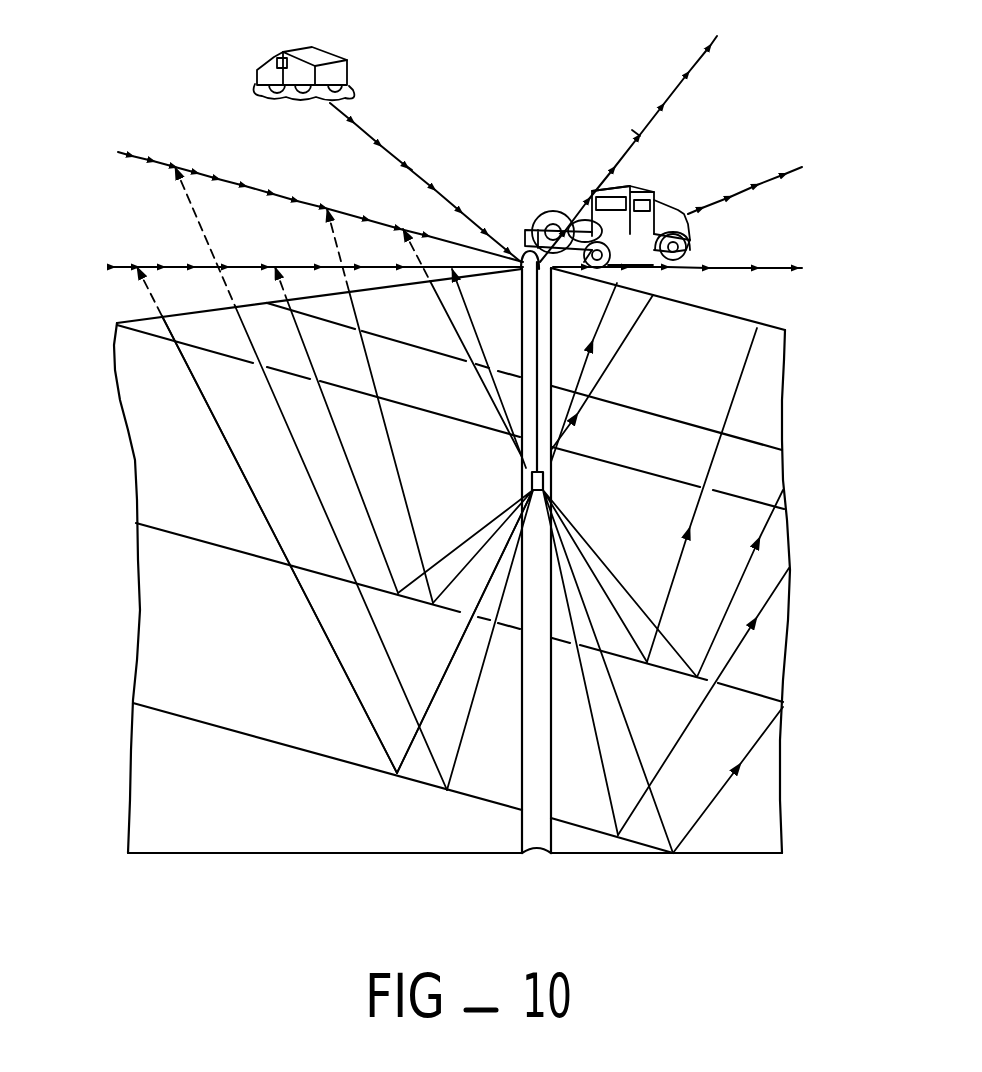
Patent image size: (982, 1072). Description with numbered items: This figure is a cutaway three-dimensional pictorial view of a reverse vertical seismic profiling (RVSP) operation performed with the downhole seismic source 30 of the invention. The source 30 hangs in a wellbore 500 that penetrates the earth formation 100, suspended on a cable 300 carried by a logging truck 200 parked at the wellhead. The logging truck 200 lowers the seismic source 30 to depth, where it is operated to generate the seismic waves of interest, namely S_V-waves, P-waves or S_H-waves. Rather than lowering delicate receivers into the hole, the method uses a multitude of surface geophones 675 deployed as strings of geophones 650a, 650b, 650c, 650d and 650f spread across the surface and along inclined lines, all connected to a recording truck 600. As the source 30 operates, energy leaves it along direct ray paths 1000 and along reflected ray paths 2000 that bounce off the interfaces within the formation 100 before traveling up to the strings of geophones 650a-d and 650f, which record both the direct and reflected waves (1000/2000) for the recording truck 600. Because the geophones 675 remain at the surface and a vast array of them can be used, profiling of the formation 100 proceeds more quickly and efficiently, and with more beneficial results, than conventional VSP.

The downhole seismic source 30 is at (530, 480).
The earth formation 100 is at (700, 388).
The logging truck 200 is at (638, 188).
The cable 300 is at (522, 253).
The wellbore 500 is at (546, 328).
The recording truck 600 is at (293, 78).
The string of geophones 650a is at (248, 265).
The string of geophones 650b is at (270, 193).
The string of geophones 650c is at (381, 143).
The string of geophones 650d is at (688, 70).
The surface receiver line (right) 650f is at (733, 267).
The surface geophones 675 is at (411, 168).
The direct seismic waves 1000 is at (333, 655).
The reflected seismic waves 2000 is at (333, 655).